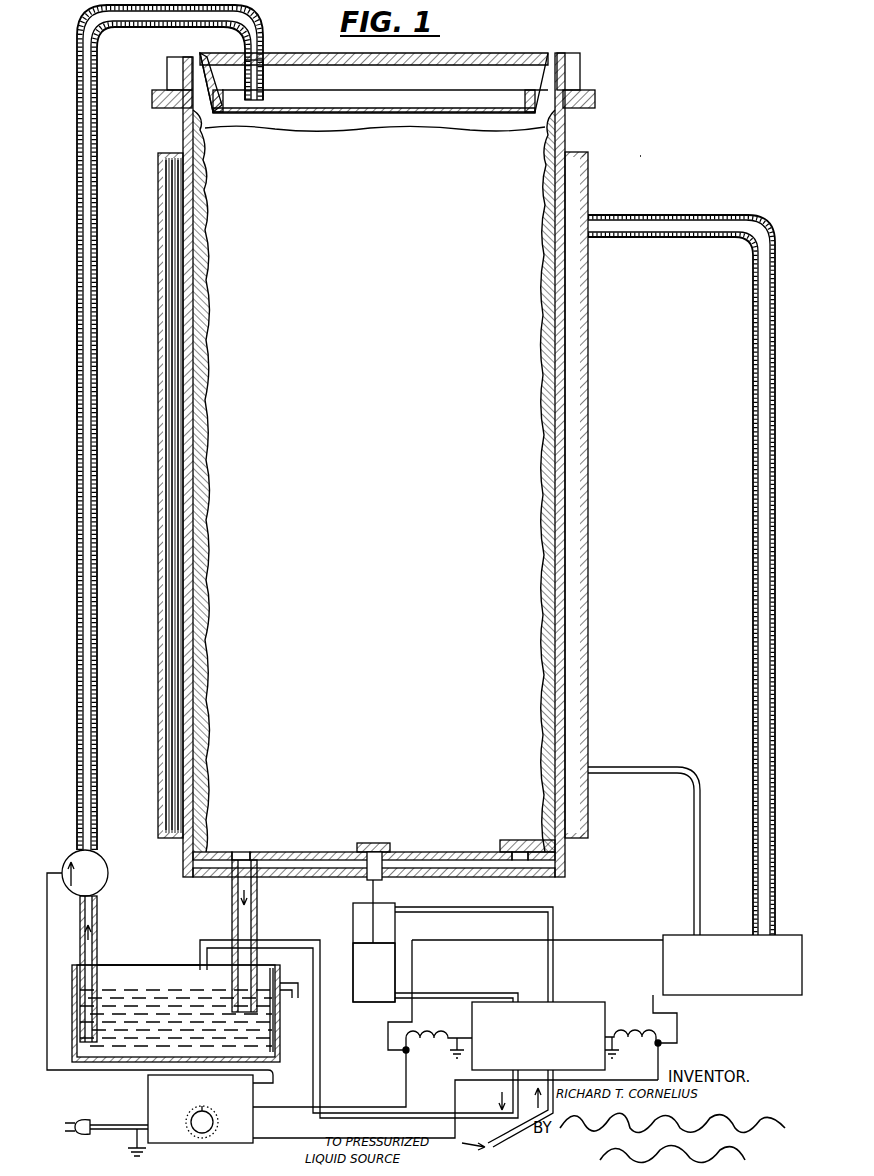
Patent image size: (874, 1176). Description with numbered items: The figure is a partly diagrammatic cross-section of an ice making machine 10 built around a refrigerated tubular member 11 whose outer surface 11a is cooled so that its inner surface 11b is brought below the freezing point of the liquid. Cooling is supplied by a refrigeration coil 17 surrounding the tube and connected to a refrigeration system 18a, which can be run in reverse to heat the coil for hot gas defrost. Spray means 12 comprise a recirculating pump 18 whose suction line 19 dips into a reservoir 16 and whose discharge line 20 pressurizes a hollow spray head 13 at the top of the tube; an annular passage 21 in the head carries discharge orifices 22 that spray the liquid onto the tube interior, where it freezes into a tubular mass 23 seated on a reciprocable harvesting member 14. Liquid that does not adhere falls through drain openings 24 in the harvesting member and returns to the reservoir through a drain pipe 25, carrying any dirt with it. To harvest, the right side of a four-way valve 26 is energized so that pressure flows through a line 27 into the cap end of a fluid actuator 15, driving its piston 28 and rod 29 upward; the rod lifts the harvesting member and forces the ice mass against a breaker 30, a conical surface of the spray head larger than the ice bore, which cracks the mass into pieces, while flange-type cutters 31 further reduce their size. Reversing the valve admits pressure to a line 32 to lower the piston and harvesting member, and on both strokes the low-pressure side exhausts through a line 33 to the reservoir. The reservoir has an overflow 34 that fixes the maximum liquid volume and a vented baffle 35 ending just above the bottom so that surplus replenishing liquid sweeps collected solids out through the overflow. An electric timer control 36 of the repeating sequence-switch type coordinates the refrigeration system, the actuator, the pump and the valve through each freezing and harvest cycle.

The ice making machine 10 is at (650, 152).
The refrigerated tubular member 11 is at (190, 318).
The outer surface 11a is at (182, 291).
The inner surface 11b is at (190, 352).
The spray means 12 is at (68, 292).
The pressurized spray head 13 is at (305, 55).
The harvesting member 14 is at (322, 852).
The fluid actuator 15 is at (343, 918).
The reservoir 16 is at (75, 992).
The refrigeration coil 17 is at (158, 245).
The recirculating pump 18 is at (106, 863).
The refrigeration system 18a is at (710, 932).
The suction line 19 is at (97, 936).
The discharge line 20 is at (77, 345).
The annular passage 21 is at (250, 92).
The discharge orifices 22 is at (193, 127).
The tubular mass of ice 23 is at (203, 228).
The drain openings 24 is at (248, 852).
The drain pipe 25 is at (232, 915).
The four-way valve 26 is at (583, 1003).
The line 27 is at (497, 992).
The piston 28 is at (375, 945).
The rod 29 is at (385, 880).
The breaker 30 is at (200, 56).
The flange-type cutters 31 is at (175, 68).
The line 32 is at (538, 910).
The line 33 is at (422, 1113).
The overflow 34 is at (286, 998).
The vented baffle 35 is at (272, 1046).
The electric timer control 36 is at (253, 1132).